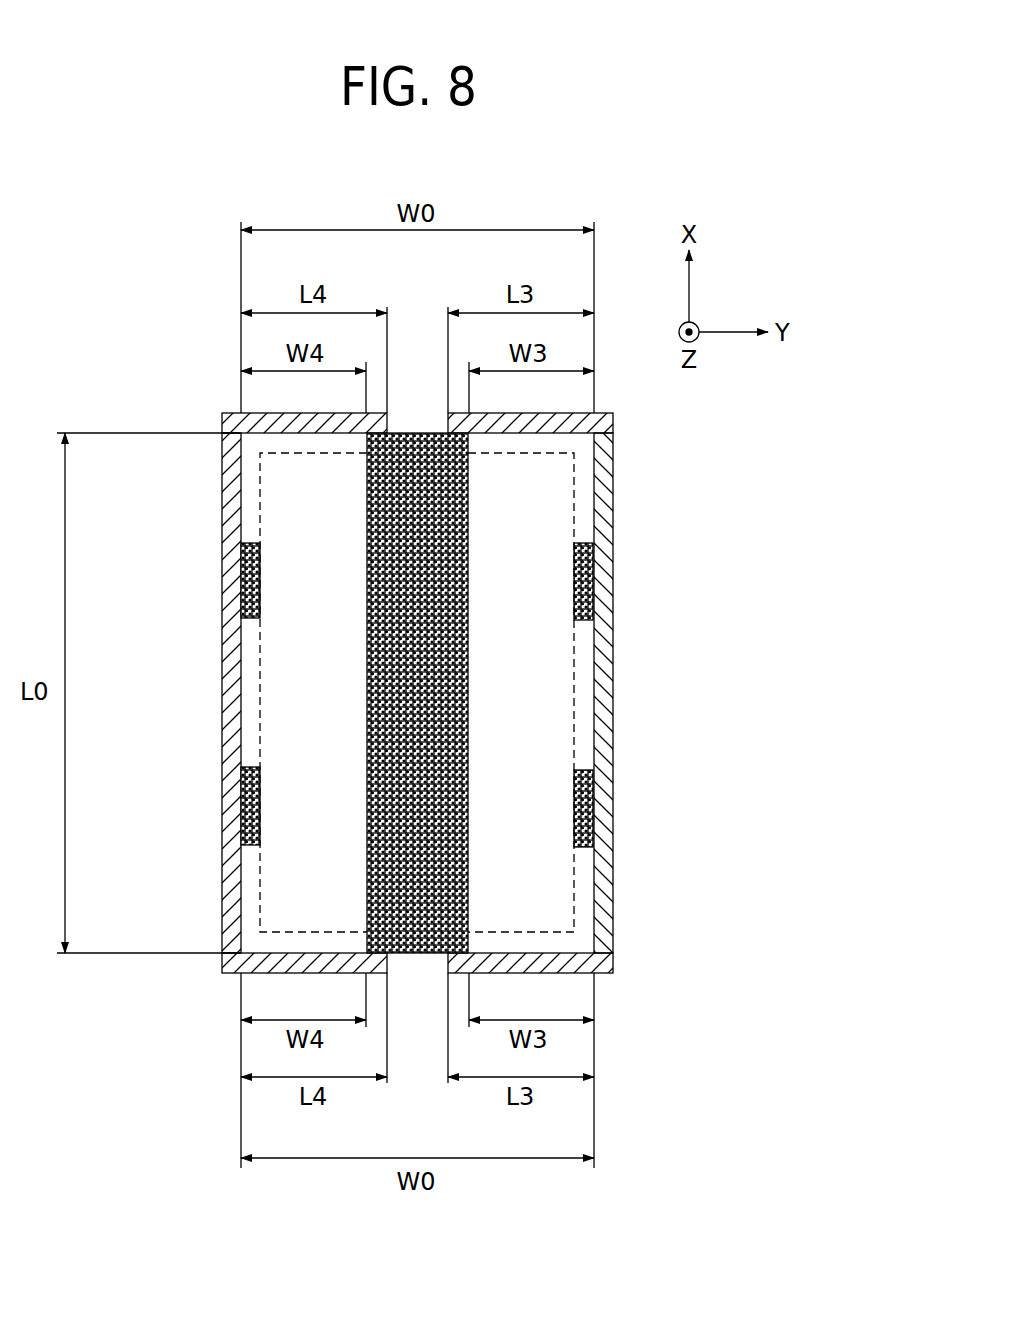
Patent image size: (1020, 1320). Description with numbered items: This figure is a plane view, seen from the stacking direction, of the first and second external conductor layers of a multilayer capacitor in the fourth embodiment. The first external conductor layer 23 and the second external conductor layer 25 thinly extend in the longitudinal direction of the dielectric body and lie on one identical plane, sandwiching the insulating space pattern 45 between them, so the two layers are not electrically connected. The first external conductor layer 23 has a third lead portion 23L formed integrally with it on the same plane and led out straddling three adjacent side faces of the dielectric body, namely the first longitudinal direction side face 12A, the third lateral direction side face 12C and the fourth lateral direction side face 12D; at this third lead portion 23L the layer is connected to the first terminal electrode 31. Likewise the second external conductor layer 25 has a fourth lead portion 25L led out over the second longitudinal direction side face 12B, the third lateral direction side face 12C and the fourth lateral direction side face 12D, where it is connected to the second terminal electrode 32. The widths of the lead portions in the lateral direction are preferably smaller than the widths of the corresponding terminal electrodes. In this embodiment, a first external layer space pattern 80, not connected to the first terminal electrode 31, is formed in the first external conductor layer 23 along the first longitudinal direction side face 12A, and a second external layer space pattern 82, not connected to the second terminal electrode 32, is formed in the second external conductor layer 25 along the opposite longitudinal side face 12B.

The first longitudinal direction side face 12A is at (649, 693).
The second longitudinal direction side face 12B is at (184, 693).
The third lateral direction side face 12C is at (413, 973).
The fourth lateral direction side face 12D is at (413, 433).
The insulating space pattern 45 is at (425, 482).
The first external layer space pattern 80 is at (587, 580).
The second external layer space pattern 82 is at (250, 578).
The first terminal electrode 31 is at (603, 697).
The second terminal electrode 32 is at (241, 618).
The second external conductor layer 25 is at (231, 697).
The first external conductor layer 23 is at (597, 702).
The fourth lead portion 25L is at (256, 942).
The third lead portion 23L is at (582, 939).